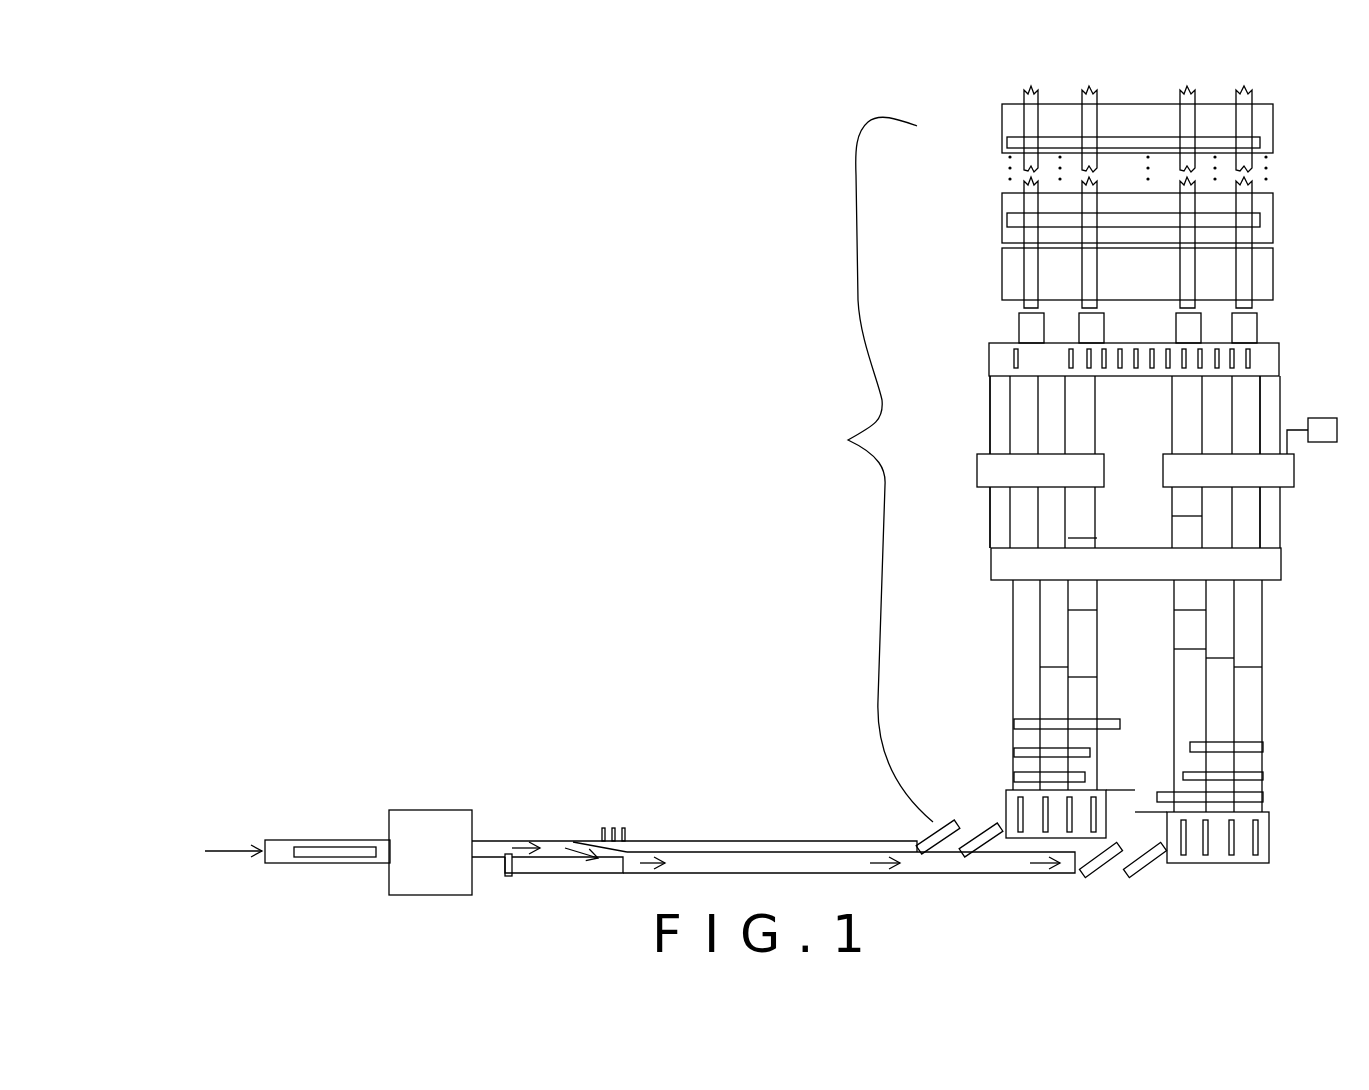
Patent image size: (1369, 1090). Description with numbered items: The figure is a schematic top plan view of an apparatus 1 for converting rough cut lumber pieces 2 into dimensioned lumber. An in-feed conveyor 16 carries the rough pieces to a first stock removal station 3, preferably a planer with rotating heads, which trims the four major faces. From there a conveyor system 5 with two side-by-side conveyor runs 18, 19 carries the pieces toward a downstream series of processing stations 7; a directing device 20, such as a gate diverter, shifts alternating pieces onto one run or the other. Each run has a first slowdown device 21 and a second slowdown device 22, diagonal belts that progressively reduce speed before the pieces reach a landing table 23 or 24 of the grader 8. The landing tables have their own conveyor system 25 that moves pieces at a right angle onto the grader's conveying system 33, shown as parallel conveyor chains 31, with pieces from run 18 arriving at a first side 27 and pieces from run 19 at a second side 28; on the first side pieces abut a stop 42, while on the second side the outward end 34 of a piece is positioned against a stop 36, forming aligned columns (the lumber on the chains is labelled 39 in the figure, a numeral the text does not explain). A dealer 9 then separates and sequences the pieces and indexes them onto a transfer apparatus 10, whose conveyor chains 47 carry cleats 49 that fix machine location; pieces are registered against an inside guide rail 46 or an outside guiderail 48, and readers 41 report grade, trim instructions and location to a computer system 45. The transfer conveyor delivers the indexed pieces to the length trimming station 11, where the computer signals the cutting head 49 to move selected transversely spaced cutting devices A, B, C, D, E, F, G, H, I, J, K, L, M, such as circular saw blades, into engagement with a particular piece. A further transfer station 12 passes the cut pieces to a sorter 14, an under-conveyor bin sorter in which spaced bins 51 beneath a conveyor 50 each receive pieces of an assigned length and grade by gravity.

The apparatus 1 is at (745, 275).
The lumber piece 2 is at (1203, 228).
The first stock removal station 3 is at (475, 822).
The conveyor system 5 is at (505, 840).
The series of processing stations 7 is at (876, 469).
The grader station 8 is at (1014, 741).
The dealer station 9 is at (1281, 562).
The transfer apparatus 10 is at (1262, 522).
The length trimming station 11 is at (981, 375).
The transfer station 12 is at (1019, 322).
The sorter 14 is at (995, 190).
The in-feed conveyor 16 is at (290, 840).
The conveyor run 18 is at (637, 841).
The conveyor run 19 is at (928, 873).
The directing device 20 is at (623, 873).
The first slowdown device 21 is at (945, 828).
The second slowdown device 22 is at (997, 843).
The landing table 23 is at (1006, 795).
The landing table 24 is at (1269, 826).
The conveyor system 25 is at (1044, 812).
The first side 27 is at (1013, 658).
The second side 28 is at (1250, 620).
The conveyor chains 31 is at (1040, 667).
The conveying system 33 is at (1010, 615).
The outward end 34 is at (1263, 777).
The stop 36 is at (1262, 689).
The sheet stack 39 is at (1068, 610).
The reader 41 is at (1003, 219).
The stop 42 is at (1013, 672).
The computer system 45 is at (1318, 418).
The inside guide rail 46 is at (990, 522).
The conveyor chains 47 is at (1202, 516).
The outside guiderail 48 is at (1281, 413).
The cutting head 49 is at (1270, 343).
The conveyor 50 is at (1253, 267).
The bin 51 is at (1003, 145).
The cutting device A is at (1248, 368).
The cutting device B is at (1232, 368).
The cutting device C is at (1217, 368).
The cutting device D is at (1200, 368).
The cutting device E is at (1184, 368).
The cutting device F is at (1168, 368).
The cutting device G is at (1152, 368).
The cutting device H is at (1136, 368).
The cutting device I is at (1120, 368).
The cutting device J is at (1104, 368).
The cutting device K is at (1089, 368).
The cutting device L is at (1068, 360).
The cutting device M is at (1012, 359).